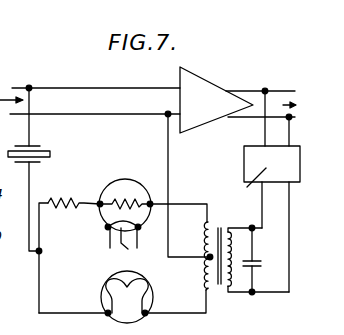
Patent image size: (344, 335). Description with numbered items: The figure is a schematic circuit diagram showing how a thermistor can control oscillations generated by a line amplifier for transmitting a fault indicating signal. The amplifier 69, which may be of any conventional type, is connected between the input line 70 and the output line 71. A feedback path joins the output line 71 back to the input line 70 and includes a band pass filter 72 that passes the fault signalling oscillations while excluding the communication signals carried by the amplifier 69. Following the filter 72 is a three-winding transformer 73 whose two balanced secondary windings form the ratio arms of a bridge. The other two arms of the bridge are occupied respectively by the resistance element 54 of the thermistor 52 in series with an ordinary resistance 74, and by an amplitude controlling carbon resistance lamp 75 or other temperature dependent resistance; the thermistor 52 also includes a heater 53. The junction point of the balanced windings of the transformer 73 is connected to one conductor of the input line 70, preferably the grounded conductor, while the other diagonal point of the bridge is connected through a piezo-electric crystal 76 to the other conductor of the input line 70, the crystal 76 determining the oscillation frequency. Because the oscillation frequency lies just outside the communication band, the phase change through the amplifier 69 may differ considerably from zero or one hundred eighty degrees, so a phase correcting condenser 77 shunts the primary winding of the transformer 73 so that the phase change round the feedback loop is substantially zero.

The thermistor 52 is at (129, 212).
The heater 53 is at (123, 246).
The resistance element 54 is at (121, 200).
The amplifier 69 is at (198, 88).
The input line 70 is at (97, 100).
The output line 71 is at (272, 98).
The band pass filter 72 is at (244, 162).
The three-winding transformer 73 is at (220, 288).
The ordinary resistance 74 is at (74, 194).
The carbon resistance lamp 75 is at (152, 283).
The piezo-electric crystal 76 is at (50, 153).
The condenser 77 is at (261, 264).